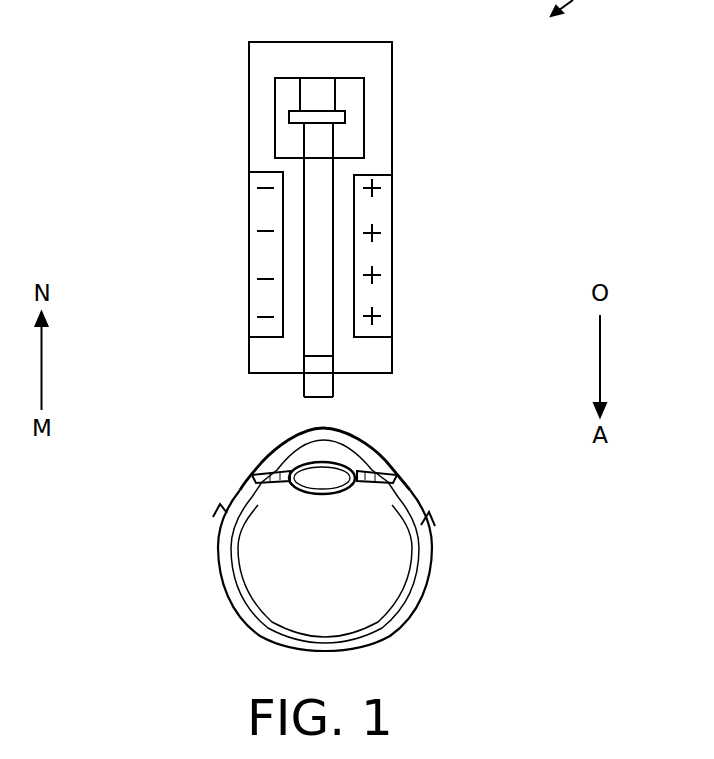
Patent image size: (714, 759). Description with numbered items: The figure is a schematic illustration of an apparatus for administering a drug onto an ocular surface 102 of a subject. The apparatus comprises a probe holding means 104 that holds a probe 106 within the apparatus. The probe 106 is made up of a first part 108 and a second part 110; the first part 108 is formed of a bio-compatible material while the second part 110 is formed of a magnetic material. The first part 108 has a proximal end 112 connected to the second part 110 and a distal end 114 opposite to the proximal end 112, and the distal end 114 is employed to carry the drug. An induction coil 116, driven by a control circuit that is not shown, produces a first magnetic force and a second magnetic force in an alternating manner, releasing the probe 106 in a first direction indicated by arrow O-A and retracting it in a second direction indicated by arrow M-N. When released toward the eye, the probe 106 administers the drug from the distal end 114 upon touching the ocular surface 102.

The ocular surface 102 is at (285, 438).
The probe holding means 104 is at (364, 102).
The probe 106 is at (333, 223).
The first part 108 is at (304, 367).
The second part 110 is at (303, 267).
The proximal end 112 is at (323, 356).
The distal end 114 is at (322, 397).
The induction coil 116 is at (257, 290).